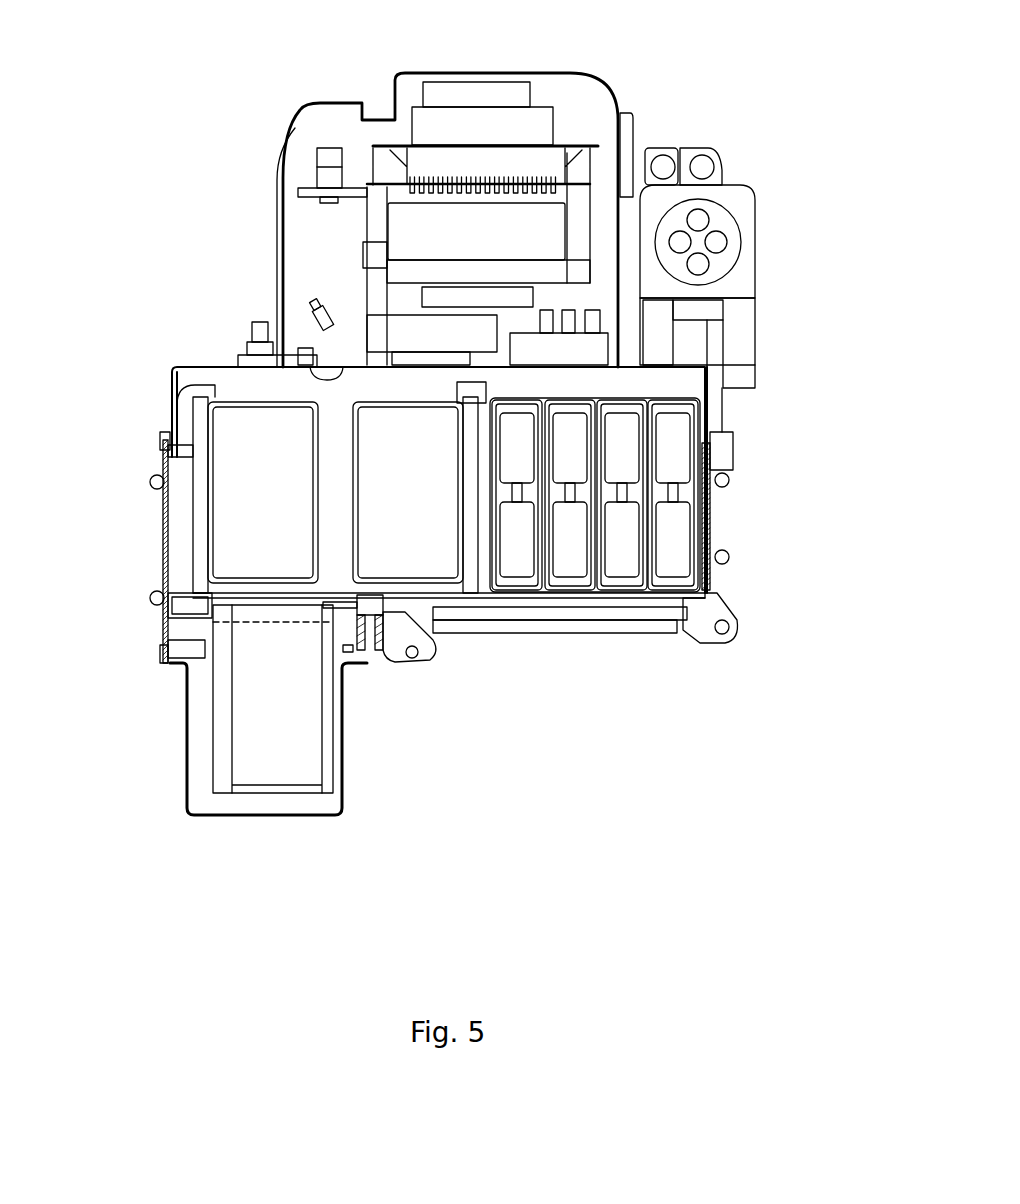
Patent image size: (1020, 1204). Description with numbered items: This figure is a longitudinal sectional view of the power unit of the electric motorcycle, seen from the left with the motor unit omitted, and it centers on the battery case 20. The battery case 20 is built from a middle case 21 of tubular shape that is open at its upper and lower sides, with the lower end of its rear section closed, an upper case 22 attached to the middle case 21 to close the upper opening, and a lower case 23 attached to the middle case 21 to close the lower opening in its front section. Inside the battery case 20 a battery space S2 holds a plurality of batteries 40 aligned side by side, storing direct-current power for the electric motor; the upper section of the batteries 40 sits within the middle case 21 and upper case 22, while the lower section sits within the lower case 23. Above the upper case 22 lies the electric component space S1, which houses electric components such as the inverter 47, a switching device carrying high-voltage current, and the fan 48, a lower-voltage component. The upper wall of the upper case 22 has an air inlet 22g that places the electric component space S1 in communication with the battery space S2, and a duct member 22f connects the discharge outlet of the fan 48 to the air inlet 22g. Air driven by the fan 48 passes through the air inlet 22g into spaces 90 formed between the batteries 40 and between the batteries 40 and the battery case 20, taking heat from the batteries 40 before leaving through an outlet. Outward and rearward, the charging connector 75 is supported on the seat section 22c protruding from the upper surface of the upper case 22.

The electric component space S1 is at (583, 105).
The inverter 47 is at (410, 233).
The fan 48 is at (377, 342).
The duct member 22f is at (353, 320).
The air inlet 22g is at (340, 380).
The charging connector 75 is at (752, 197).
The seat section 22c is at (740, 310).
The battery case 20 is at (78, 675).
The upper case 22 is at (170, 413).
The middle case 21 is at (165, 530).
The lower case 23 is at (187, 720).
The battery 40 is at (263, 537).
The space 90 is at (180, 565).
The battery space S2 is at (683, 382).